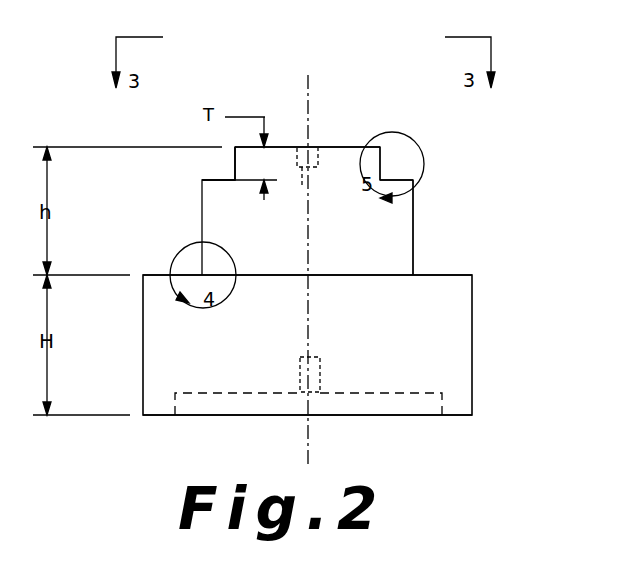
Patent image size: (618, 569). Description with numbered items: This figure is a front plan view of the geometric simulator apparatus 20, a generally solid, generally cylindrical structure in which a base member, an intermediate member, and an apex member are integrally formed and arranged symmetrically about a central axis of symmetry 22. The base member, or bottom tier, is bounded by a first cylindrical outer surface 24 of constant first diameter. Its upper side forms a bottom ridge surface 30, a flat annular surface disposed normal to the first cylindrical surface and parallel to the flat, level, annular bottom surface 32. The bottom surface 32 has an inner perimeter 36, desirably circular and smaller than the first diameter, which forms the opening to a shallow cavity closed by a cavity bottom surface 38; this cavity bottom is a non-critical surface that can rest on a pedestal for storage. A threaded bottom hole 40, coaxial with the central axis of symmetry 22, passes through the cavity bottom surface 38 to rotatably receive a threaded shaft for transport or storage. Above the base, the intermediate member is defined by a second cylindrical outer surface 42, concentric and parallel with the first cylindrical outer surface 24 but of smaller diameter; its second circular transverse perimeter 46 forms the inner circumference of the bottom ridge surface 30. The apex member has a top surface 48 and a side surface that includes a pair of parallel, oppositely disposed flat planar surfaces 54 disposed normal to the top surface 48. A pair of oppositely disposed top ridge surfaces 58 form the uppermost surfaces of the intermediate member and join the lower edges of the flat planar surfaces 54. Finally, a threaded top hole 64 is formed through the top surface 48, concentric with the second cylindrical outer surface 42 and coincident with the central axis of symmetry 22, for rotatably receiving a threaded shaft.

The geometric simulator apparatus 20 is at (434, 206).
The central axis of symmetry 22 is at (308, 120).
The first cylindrical outer surface 24 is at (473, 299).
The bottom ridge surface 30 is at (455, 275).
The bottom surface 32 is at (457, 416).
The inner perimeter 36 is at (443, 405).
The cavity bottom surface 38 is at (206, 395).
The threaded bottom hole 40 is at (326, 370).
The second cylindrical outer surface 42 is at (413, 237).
The second circular transverse perimeter 46 is at (202, 183).
The top surface 48 is at (357, 167).
The flat planar surfaces 54 is at (235, 150).
The top ridge surfaces 58 is at (225, 178).
The threaded top hole 64 is at (310, 193).